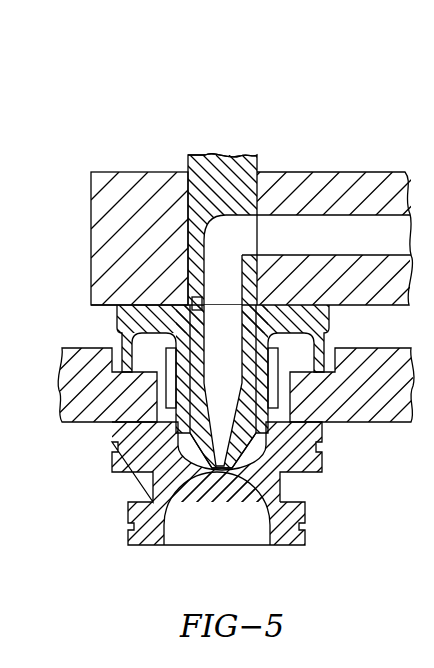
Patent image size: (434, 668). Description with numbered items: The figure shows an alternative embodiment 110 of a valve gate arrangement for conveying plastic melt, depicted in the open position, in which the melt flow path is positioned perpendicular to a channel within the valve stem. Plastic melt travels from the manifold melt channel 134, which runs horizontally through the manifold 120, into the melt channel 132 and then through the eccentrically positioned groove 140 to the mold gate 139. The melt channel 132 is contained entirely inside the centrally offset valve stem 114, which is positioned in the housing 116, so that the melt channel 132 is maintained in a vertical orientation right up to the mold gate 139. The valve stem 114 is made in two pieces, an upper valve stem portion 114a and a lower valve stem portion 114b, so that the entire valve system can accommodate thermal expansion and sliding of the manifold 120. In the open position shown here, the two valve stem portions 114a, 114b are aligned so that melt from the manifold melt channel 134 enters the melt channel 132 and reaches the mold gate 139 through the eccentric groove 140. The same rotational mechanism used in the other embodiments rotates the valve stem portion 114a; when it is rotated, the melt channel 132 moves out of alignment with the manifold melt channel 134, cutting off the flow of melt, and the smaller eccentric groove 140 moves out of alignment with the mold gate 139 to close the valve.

The alternative embodiment 110 is at (192, 100).
The manifold 120 is at (130, 180).
The valve stem portion 114a is at (208, 165).
The valve stem 114 is at (258, 163).
The manifold melt channel 134 is at (354, 226).
The housing 116 is at (120, 316).
The melt channel 132 is at (210, 370).
The valve stem portion 114b is at (245, 450).
The eccentrically positioned groove 140 is at (207, 455).
The mold gate 139 is at (215, 470).